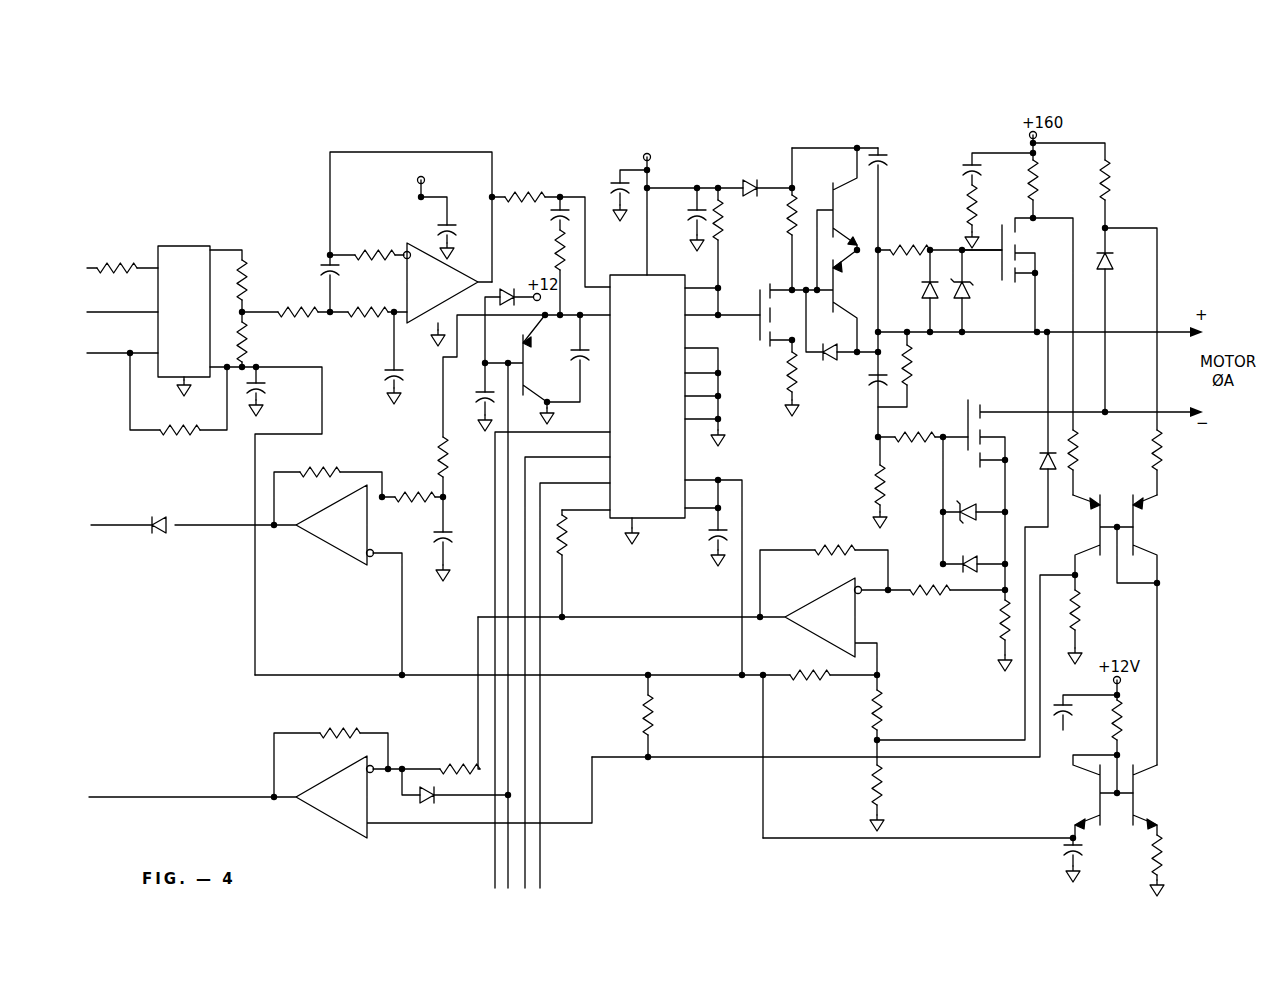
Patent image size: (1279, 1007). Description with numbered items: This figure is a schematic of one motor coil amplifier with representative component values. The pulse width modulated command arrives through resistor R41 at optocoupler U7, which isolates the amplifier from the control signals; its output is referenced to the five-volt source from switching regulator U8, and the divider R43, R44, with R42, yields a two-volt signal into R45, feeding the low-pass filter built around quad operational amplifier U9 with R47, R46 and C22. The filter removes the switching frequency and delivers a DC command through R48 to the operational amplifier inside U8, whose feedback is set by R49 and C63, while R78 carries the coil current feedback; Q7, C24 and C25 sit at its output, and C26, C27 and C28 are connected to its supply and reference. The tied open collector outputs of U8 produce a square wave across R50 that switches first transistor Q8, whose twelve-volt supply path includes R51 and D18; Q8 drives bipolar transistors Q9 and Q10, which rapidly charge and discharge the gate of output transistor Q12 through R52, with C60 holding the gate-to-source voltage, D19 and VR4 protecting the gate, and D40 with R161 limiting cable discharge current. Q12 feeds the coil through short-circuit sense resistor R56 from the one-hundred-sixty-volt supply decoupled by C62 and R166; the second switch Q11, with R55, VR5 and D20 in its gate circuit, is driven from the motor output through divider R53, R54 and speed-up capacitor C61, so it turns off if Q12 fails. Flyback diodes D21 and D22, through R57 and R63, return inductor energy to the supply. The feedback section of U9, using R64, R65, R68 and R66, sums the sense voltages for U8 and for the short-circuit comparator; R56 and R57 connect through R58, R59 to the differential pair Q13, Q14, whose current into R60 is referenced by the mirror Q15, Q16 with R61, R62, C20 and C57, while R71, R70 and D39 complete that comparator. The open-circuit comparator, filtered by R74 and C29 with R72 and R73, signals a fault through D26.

The input resistor R41 is at (122, 269).
The optocoupler U7 is at (155, 314).
The voltage divider resistor R43 is at (244, 281).
The voltage divider resistor R44 is at (246, 341).
The resistor R42 is at (178, 404).
The low-pass filter input resistor R45 is at (287, 310).
The low-pass filter resistor R47 is at (370, 236).
The low-pass filter resistor R46 is at (368, 316).
The low-pass filter capacitor C22 is at (371, 358).
The quad operational amplifier U9 is at (485, 499).
The command signal resistor R48 is at (551, 222).
The feedback capacitor C63 is at (536, 217).
The feedback resistor R49 is at (531, 274).
The capacitor C24 is at (469, 397).
The transistor Q7 is at (522, 369).
The capacitor C25 is at (569, 358).
The switching regulator U8 is at (627, 512).
The bypass capacitor C26 is at (606, 192).
The bypass capacitor C27 is at (680, 222).
The capacitor C28 is at (697, 539).
The output resistor R50 is at (733, 238).
The feedback input resistor R78 is at (579, 563).
The diode D18 is at (765, 173).
The resistor R51 is at (773, 220).
The first switch transistor Q8 is at (760, 315).
The current limiting resistor R161 is at (768, 378).
The current amplifying transistor Q9 is at (842, 219).
The current amplifying transistor Q10 is at (833, 301).
The diode D40 is at (843, 325).
The gate supply capacitor C60 is at (895, 289).
The speed-up capacitor C61 is at (847, 387).
The gate resistor R52 is at (940, 235).
The protection diode D19 is at (908, 292).
The zener protection diode VR4 is at (974, 292).
The voltage divider resistor R53 is at (916, 368).
The gate resistor R55 is at (923, 435).
The voltage divider resistor R54 is at (855, 482).
The capacitor C62 is at (978, 180).
The resistor R166 is at (991, 215).
The short-circuit sense resistor R56 is at (1053, 188).
The short-circuit sense resistor R57 is at (1131, 192).
The output switch transistor Q12 is at (1017, 324).
The flyback diode D21 is at (1127, 329).
The second transistor switch Q11 is at (1073, 488).
The zener diode VR5 is at (974, 503).
The diode D20 is at (974, 554).
The flyback diode D22 is at (966, 536).
The sense coupling resistor R59 is at (1098, 461).
The sense coupling resistor R58 is at (1181, 461).
The differential amplifier transistor Q14 is at (1095, 536).
The differential amplifier transistor Q13 is at (1143, 630).
The reference forming resistor R60 is at (859, 667).
The capacitor C20 is at (1080, 719).
The base bias resistor R61 is at (1133, 747).
The current mirror transistor Q16 is at (1093, 798).
The current reference transistor Q15 is at (1151, 800).
The current reference resistor R62 is at (1179, 859).
The capacitor C57 is at (922, 860).
The reference scaling resistor R65 is at (821, 673).
The resistor R64 is at (893, 720).
The current sense resistor R63 is at (905, 794).
The gain setting resistor R68 is at (825, 570).
The output resistor R66 is at (946, 589).
The fault output diode D26 is at (153, 513).
The comparator feedback resistor R72 is at (329, 486).
The comparator input resistor R73 is at (414, 496).
The filter resistor R74 is at (458, 465).
The filter capacitor C29 is at (460, 539).
The comparator feedback resistor R71 is at (331, 751).
The comparator input resistor R70 is at (436, 695).
The diode D39 is at (456, 786).